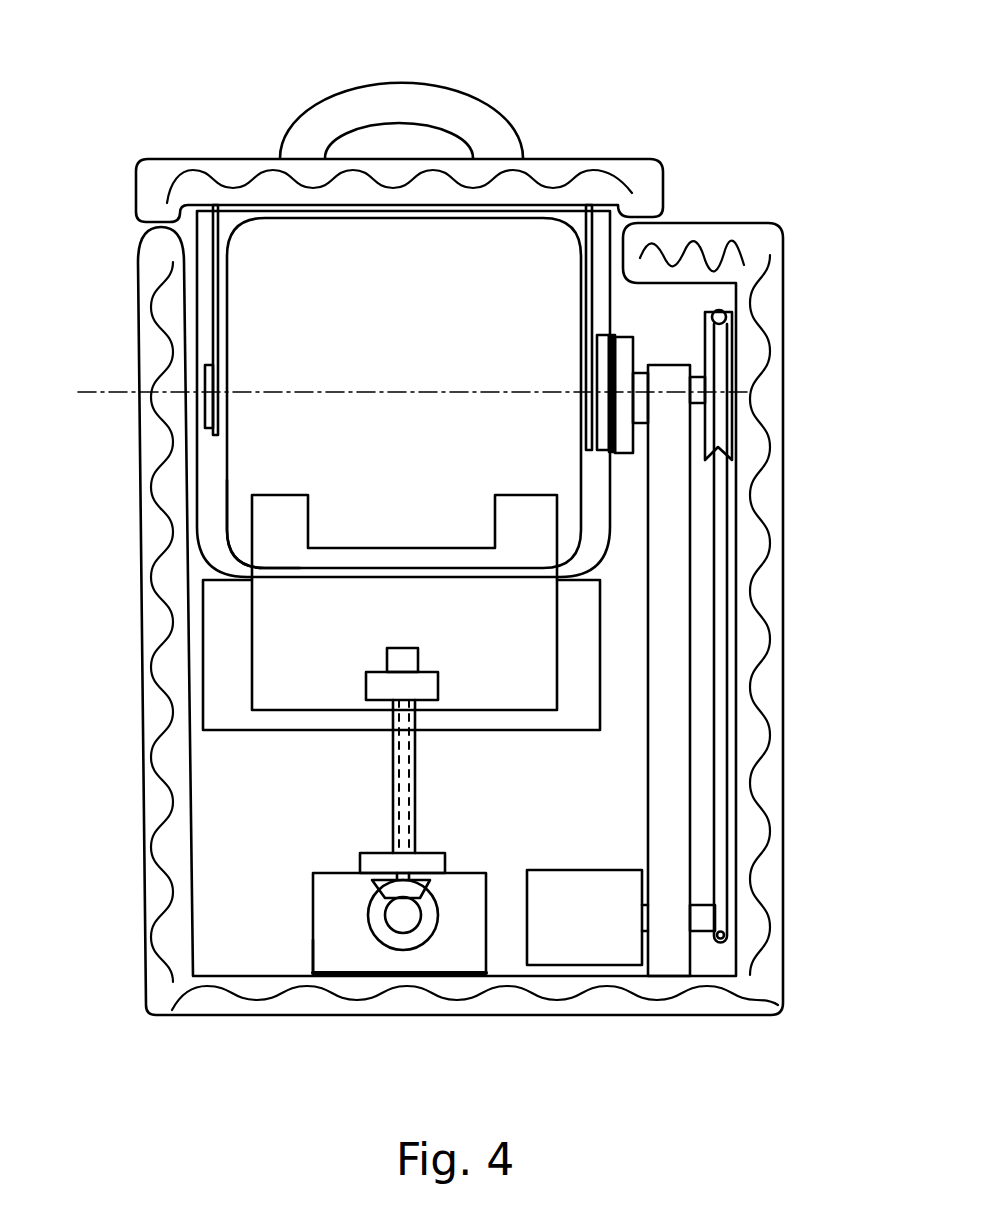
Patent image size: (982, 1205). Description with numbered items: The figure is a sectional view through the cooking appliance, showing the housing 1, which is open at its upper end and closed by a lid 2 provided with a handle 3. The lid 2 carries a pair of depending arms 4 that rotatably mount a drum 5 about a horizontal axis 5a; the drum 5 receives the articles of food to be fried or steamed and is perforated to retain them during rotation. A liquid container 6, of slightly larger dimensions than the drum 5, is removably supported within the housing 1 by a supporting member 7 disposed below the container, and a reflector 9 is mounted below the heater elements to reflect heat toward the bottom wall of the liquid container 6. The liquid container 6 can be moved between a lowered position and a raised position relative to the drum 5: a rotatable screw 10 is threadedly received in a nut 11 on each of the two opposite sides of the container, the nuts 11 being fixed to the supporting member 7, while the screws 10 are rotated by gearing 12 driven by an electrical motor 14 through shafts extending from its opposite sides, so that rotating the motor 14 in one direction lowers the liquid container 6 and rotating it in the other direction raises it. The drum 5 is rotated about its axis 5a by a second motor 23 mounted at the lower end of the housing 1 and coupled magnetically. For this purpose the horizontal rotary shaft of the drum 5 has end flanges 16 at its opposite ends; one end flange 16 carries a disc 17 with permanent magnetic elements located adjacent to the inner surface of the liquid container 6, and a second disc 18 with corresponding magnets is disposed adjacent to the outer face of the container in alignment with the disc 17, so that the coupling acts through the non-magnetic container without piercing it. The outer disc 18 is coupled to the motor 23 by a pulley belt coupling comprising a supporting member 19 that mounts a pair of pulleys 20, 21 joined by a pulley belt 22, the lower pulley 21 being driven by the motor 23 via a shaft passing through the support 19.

The housing 1 is at (750, 238).
The lid 2 is at (647, 180).
The handle 3 is at (365, 130).
The depending arms 4 is at (216, 275).
The drum 5 is at (250, 337).
The horizontal axis 5a is at (365, 397).
The liquid container 6 is at (223, 500).
The supporting member 7 is at (280, 618).
The reflector 9 is at (225, 708).
The rotatable screw 10 is at (400, 795).
The nut 11 is at (425, 688).
The gearing 12 is at (400, 917).
The electrical motor 14 is at (313, 938).
The end flanges 16 is at (205, 408).
The disc 17 is at (632, 342).
The second disc 18 is at (623, 433).
The supporting member 19 is at (705, 748).
The pulley 20 is at (723, 422).
The lower pulley 21 is at (733, 910).
The pulley belt 22 is at (762, 630).
The second motor 23 is at (603, 963).